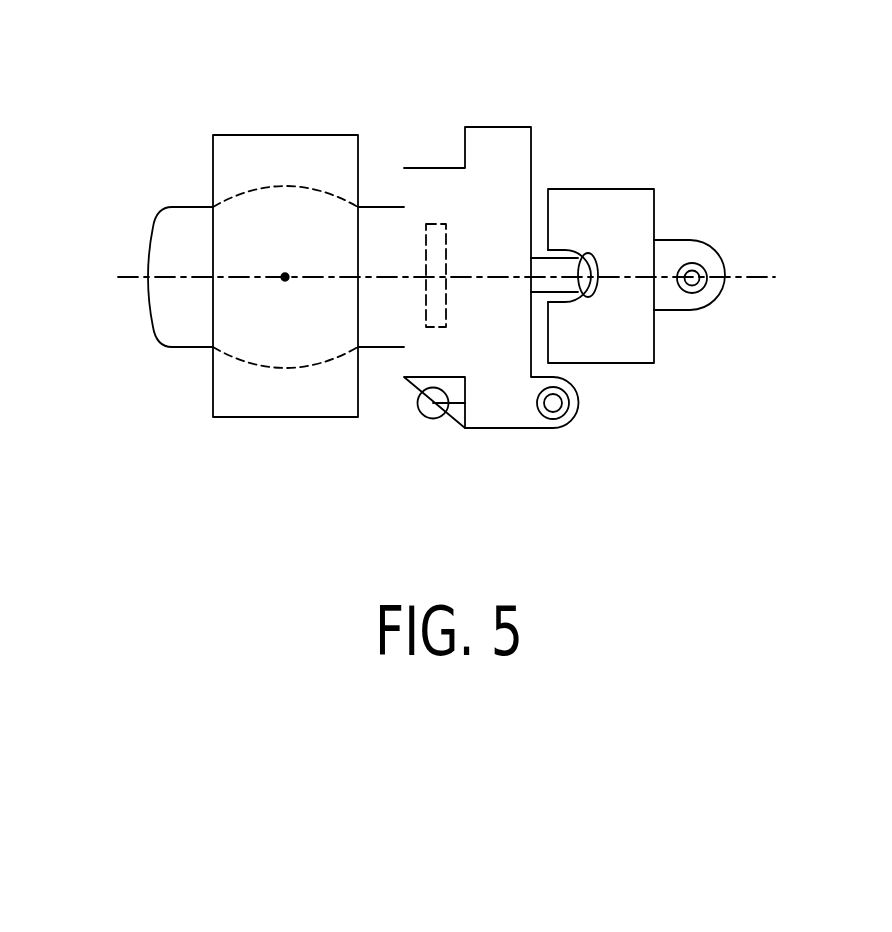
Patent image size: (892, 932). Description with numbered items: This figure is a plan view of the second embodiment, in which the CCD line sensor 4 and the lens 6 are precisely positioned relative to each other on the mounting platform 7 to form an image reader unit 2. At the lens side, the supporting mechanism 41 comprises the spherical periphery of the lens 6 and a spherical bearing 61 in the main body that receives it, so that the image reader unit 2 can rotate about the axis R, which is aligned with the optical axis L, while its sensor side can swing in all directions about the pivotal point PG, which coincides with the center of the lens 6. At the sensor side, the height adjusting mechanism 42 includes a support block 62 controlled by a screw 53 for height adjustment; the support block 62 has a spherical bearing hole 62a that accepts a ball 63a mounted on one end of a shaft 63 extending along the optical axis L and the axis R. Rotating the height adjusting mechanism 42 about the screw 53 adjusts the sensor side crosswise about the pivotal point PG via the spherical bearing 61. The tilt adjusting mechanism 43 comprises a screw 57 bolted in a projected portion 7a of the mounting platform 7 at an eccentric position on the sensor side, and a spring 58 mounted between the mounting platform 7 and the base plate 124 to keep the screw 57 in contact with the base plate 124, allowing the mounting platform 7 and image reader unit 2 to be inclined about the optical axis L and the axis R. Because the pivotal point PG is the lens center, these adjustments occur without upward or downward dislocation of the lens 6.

The base plate 124 is at (220, 521).
The spherical bearing 61 is at (330, 150).
The supporting mechanism 41 is at (257, 102).
The lens 6 is at (183, 347).
The axis R is at (143, 277).
The optical axis L is at (183, 280).
The pivotal point and lens center PG is at (289, 274).
The image reader unit 2 is at (392, 132).
The mounting platform 7 is at (412, 380).
The projected portion 7a is at (507, 415).
The tilt adjusting mechanism 43 is at (577, 423).
The screw 57 is at (552, 415).
The spring 58 is at (432, 418).
The CCD line sensor 4 is at (426, 224).
The shaft 63 is at (540, 223).
The support block 62 is at (642, 217).
The spherical bearing hole 62a is at (590, 288).
The ball 63a is at (597, 268).
The height adjusting mechanism 42 is at (702, 312).
The screw 53 is at (697, 262).